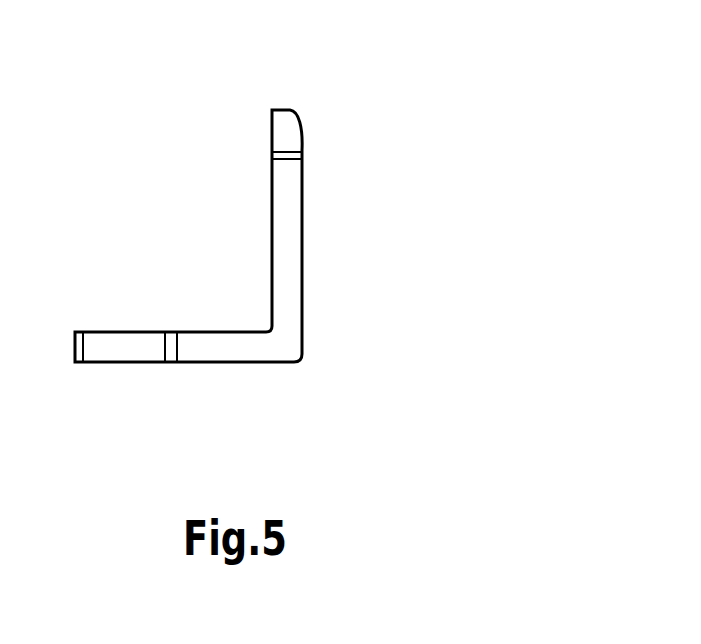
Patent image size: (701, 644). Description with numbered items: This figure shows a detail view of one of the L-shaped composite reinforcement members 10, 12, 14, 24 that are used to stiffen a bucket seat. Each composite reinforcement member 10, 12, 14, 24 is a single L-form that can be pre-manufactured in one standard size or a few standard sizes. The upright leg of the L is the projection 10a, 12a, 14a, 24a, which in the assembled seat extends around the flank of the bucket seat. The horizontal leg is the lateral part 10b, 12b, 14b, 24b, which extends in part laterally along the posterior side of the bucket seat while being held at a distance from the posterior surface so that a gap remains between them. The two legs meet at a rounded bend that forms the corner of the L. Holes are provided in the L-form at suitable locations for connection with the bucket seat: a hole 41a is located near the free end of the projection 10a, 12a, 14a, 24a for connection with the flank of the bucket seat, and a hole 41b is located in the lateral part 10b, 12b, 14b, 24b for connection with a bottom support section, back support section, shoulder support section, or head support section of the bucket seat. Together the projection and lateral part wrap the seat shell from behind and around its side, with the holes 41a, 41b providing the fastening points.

The composite reinforcement member 10 is at (314, 234).
The composite reinforcement member 12 is at (314, 234).
The composite reinforcement member 14 is at (314, 234).
The composite reinforcement member 24 is at (314, 234).
The projection 10a is at (426, 182).
The projection 12a is at (426, 182).
The projection 14a is at (426, 182).
The projection 24a is at (426, 182).
The lateral part 10b is at (171, 336).
The lateral part 12b is at (171, 336).
The lateral part 14b is at (171, 336).
The lateral part 24b is at (171, 336).
The hole 41a is at (296, 155).
The hole 41b is at (167, 358).